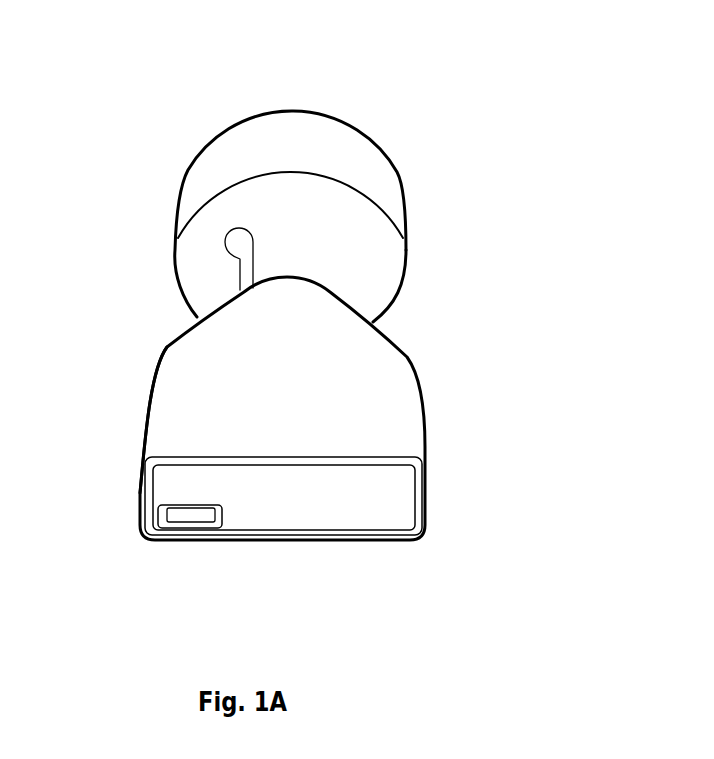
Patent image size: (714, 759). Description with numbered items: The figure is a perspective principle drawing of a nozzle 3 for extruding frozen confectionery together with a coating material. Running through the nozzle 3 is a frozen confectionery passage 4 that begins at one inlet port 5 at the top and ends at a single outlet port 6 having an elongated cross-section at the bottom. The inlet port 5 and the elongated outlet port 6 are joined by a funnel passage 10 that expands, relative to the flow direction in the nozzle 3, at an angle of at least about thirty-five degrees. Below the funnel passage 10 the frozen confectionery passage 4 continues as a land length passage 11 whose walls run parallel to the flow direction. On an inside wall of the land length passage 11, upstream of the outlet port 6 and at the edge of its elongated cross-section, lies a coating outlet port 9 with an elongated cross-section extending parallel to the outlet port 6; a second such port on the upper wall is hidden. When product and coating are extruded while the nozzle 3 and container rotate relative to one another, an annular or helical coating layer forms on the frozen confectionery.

The nozzle 3 is at (318, 100).
The frozen confectionery passage 4 is at (427, 307).
The inlet port 5 is at (357, 490).
The outlet port 6 is at (420, 523).
The coating outlet port 9 is at (207, 520).
The funnel passage 10 is at (163, 343).
The land length passage 11 is at (140, 418).